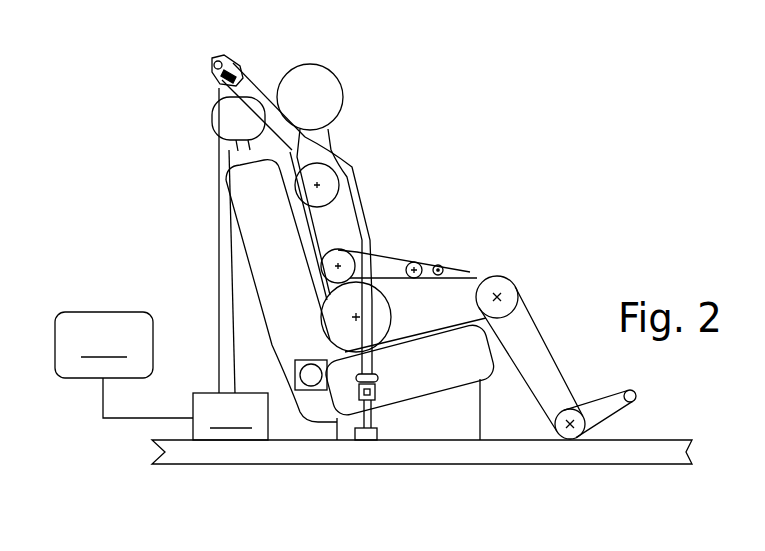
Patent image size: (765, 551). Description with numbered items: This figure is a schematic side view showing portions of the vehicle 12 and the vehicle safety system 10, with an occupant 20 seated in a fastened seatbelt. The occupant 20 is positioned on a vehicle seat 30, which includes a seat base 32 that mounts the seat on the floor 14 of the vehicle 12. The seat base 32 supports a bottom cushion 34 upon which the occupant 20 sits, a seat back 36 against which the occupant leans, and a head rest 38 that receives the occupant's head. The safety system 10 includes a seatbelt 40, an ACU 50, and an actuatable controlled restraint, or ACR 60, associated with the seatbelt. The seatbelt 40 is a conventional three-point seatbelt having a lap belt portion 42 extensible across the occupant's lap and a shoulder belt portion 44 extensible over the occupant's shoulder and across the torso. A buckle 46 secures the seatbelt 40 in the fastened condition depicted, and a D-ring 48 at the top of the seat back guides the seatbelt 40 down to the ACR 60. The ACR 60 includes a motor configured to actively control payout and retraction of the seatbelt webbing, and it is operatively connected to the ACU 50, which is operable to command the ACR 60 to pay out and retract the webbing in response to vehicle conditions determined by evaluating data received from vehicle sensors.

The vehicle safety system 10 is at (105, 210).
The vehicle 12 is at (127, 78).
The floor 14 is at (494, 446).
The occupant 20 is at (372, 130).
The vehicle seat 30 is at (185, 237).
The seat base 32 is at (438, 420).
The bottom cushion 34 is at (403, 388).
The seat back 36 is at (273, 283).
The head rest 38 is at (222, 122).
The seatbelt 40 is at (372, 230).
The lap belt portion 42 is at (374, 315).
The shoulder belt portion 44 is at (270, 100).
The buckle 46 is at (376, 383).
The D-ring 48 is at (208, 70).
The ACU 50 is at (80, 312).
The actuatable controlled restraint (ACR) 60 is at (208, 393).